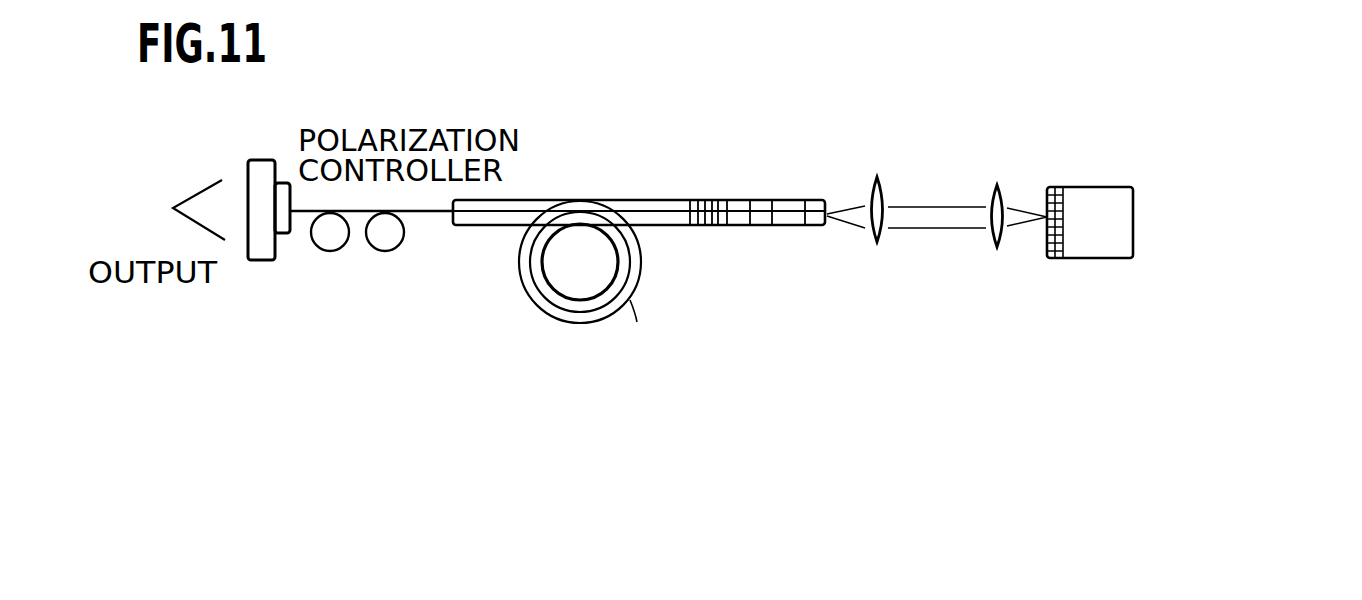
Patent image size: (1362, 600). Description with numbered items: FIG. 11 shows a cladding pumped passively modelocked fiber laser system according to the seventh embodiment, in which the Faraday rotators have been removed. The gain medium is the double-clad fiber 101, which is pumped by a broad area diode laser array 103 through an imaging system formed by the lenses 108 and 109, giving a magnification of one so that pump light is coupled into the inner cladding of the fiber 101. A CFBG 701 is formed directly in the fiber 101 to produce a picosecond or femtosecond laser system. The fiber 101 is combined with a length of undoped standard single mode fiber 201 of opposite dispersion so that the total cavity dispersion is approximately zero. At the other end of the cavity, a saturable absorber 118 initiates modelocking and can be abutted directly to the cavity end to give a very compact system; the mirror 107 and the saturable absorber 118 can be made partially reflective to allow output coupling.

The mirror 107 is at (253, 160).
The saturable absorber 118 is at (287, 183).
The single mode fiber 201 is at (395, 249).
The fiber 101 is at (537, 200).
The CFBG 701 is at (730, 200).
The lens 109 is at (868, 243).
The lens 108 is at (990, 243).
The broad area diode laser array 103 is at (1117, 187).